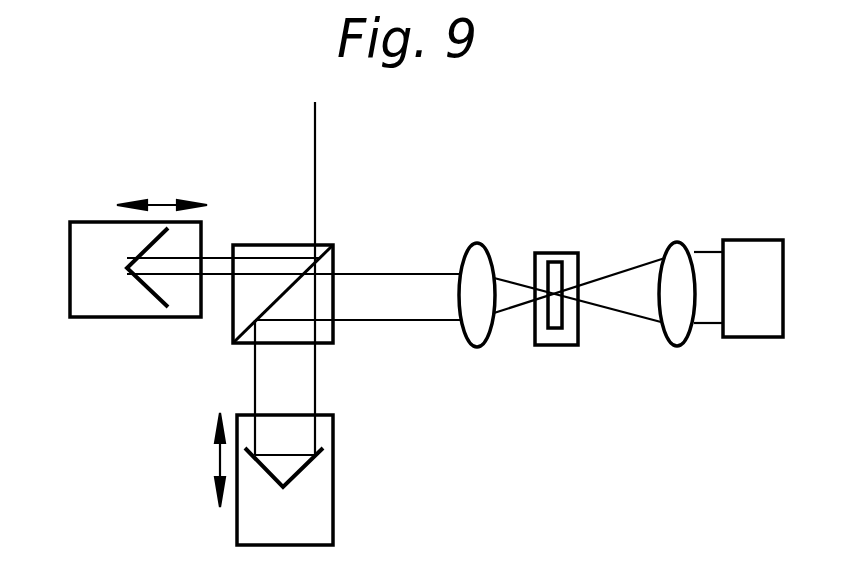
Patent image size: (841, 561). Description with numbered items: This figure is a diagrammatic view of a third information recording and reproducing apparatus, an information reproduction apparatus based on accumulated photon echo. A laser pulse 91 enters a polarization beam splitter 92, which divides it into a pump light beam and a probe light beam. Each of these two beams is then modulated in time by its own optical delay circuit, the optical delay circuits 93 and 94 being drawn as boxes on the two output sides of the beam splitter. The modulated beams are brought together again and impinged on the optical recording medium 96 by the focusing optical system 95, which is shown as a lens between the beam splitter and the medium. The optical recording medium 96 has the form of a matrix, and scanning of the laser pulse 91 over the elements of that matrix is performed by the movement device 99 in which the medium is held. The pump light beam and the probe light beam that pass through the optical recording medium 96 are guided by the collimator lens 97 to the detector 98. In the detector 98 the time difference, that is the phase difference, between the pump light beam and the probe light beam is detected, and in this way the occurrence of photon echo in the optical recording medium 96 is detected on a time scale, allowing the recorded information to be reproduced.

The laser pulse 91 is at (314, 128).
The polarization beam splitter 92 is at (330, 245).
The optical delay circuit 93 is at (333, 490).
The optical delay circuit 94 is at (128, 318).
The focusing optical system 95 is at (474, 243).
The optical recording medium 96 is at (558, 262).
The collimator lens 97 is at (680, 212).
The detector 98 is at (762, 338).
The movement device 99 is at (575, 346).